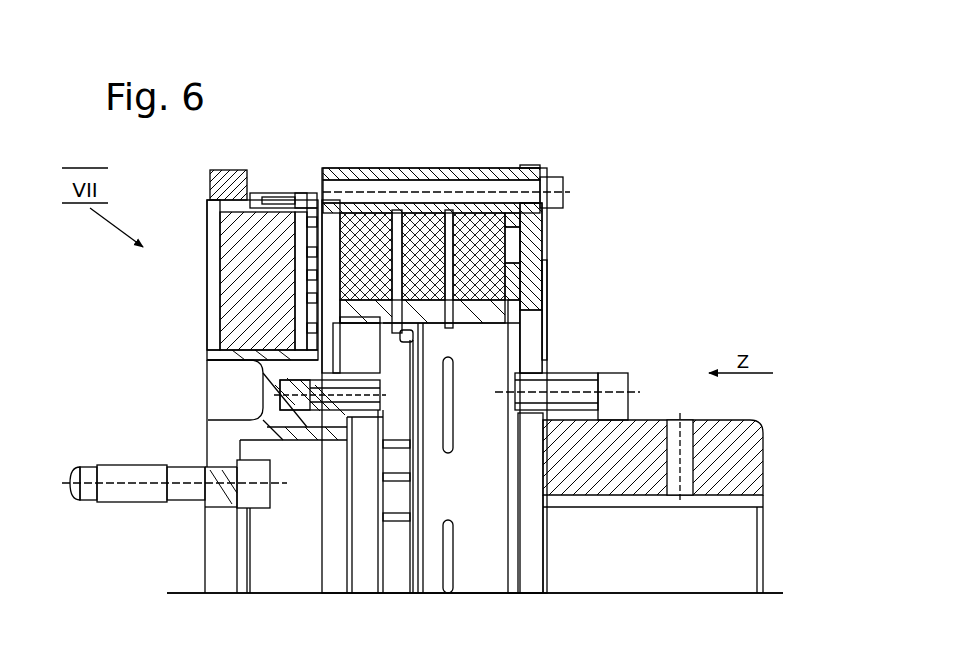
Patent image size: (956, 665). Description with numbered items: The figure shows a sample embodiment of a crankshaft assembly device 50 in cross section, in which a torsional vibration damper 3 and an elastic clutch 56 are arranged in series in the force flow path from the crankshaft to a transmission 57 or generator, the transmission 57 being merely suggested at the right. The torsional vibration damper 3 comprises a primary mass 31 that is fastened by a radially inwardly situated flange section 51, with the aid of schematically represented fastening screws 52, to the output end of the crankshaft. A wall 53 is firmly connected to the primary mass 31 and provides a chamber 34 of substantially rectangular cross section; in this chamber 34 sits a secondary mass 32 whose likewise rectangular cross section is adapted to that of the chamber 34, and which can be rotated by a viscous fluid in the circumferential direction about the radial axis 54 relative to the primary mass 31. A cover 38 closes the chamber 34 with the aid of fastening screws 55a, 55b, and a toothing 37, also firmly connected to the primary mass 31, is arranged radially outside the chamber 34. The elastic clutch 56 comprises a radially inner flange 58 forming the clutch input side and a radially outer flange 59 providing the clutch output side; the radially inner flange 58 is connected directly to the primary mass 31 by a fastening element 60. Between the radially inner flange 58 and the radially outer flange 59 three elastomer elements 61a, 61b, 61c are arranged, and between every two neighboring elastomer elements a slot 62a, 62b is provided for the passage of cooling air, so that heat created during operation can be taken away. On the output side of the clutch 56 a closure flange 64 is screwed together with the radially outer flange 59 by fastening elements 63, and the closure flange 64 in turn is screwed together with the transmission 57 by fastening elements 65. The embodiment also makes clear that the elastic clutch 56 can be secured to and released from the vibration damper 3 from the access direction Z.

The torsional vibration damper 3 is at (200, 313).
The primary mass 31 is at (207, 445).
The secondary mass 32 is at (222, 260).
The chamber 34 is at (253, 200).
The toothing 37 is at (210, 195).
The cover 38 is at (340, 215).
The device 50 is at (530, 664).
The flange section 51 is at (207, 512).
The fastening screws 52 is at (143, 503).
The wall 53 is at (210, 292).
The radial axis 54 is at (620, 593).
The fastening screw 55a is at (300, 195).
The fastening screw 55b is at (215, 343).
The elastic clutch 56 is at (464, 156).
The transmission 57 is at (633, 450).
The radially inner flange 58 is at (522, 323).
The radially outer flange 59 is at (478, 205).
The fastening element 60 is at (327, 400).
The elastomer element 61a is at (522, 226).
The elastomer element 61b is at (507, 263).
The elastomer element 61c is at (522, 293).
The slot 62a is at (395, 260).
The slot 62b is at (450, 260).
The fastening elements 63 is at (415, 185).
The closure flange 64 is at (537, 278).
The fastening elements 65 is at (578, 368).